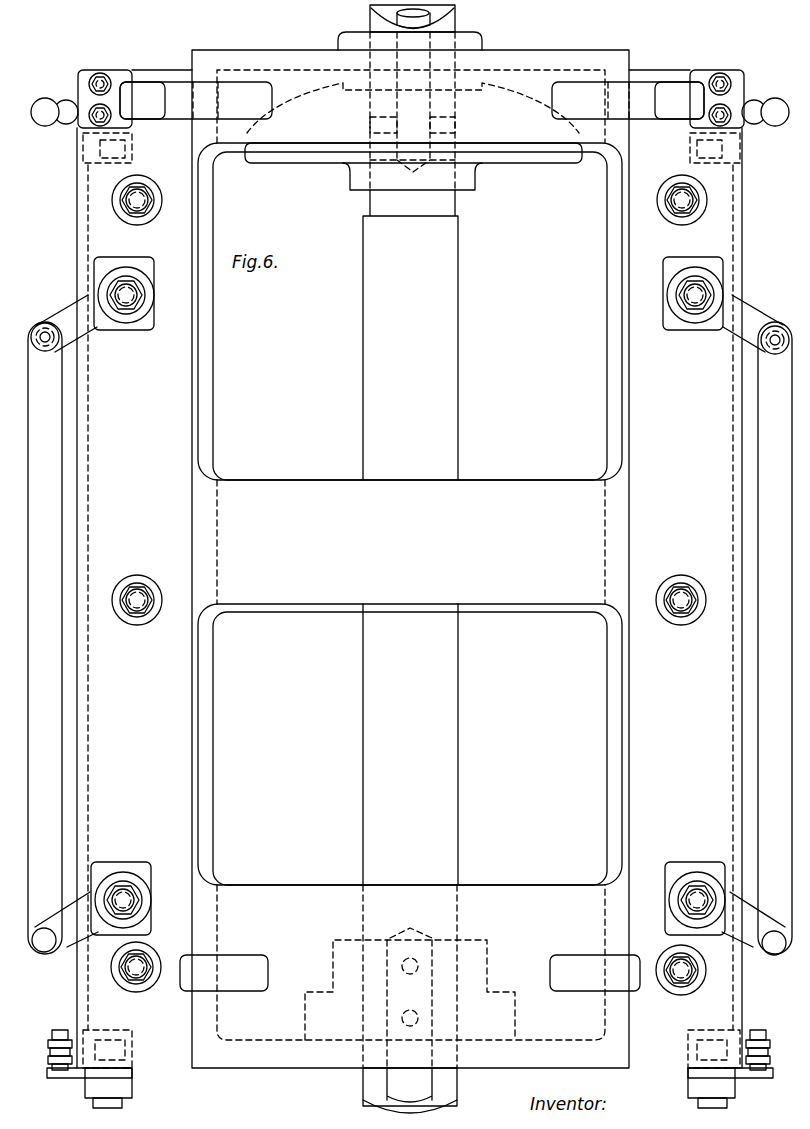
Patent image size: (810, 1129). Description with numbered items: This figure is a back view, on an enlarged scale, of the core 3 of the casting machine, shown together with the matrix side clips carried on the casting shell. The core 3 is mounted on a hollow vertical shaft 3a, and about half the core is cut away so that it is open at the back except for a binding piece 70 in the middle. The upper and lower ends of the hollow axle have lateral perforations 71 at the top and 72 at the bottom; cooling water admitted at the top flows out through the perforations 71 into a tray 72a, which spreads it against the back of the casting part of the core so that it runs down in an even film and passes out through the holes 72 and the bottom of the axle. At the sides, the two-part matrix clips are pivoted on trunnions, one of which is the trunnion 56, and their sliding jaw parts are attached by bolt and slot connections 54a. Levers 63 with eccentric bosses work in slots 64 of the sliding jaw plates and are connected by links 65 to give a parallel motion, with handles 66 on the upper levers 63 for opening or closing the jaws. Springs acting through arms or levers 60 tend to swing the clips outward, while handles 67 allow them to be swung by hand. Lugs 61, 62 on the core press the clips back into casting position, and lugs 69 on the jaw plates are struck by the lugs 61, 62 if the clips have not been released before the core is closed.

The core 3 is at (508, 1060).
The hollow vertical shaft 3a is at (442, 25).
The bolt and slot connections 54a is at (152, 218).
The trunnion 56 is at (122, 1104).
The arm or lever 60 is at (48, 1076).
The lug or projection 61 is at (180, 105).
The lug or projection 62 is at (650, 108).
The lever with eccentric boss 63 is at (72, 310).
The slot 64 is at (150, 270).
The link 65 is at (62, 782).
The handle 66 is at (60, 345).
The handle 67 is at (45, 98).
The lug or projection 69 is at (143, 70).
The binding piece 70 is at (404, 542).
The lateral perforations 71 is at (372, 124).
The lateral perforations 72 is at (416, 962).
The tray 72a is at (520, 155).